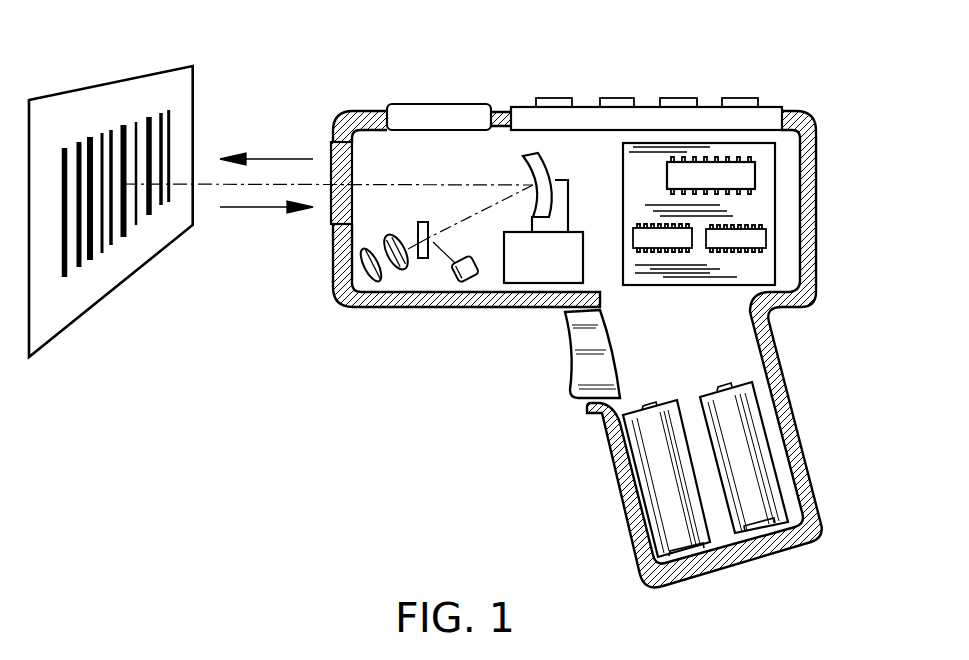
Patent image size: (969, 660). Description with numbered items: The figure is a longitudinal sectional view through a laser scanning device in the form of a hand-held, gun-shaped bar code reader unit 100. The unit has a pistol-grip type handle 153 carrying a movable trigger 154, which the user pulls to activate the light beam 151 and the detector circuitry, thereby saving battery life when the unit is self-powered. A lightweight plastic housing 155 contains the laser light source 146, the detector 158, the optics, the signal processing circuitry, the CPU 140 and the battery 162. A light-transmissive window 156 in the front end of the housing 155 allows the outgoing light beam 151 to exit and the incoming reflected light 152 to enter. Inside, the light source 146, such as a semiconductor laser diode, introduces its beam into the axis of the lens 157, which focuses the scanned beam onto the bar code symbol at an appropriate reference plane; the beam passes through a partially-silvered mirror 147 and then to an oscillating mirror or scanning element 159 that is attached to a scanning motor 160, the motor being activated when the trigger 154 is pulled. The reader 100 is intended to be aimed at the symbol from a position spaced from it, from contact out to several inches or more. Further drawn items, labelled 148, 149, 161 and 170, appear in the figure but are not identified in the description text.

The bar code reader unit 100 is at (527, 428).
The CPU 140 is at (683, 168).
The light source 146 is at (358, 278).
The partially-silvered mirror 147 is at (428, 260).
The circuit board 148 is at (713, 113).
The indicator 149 is at (448, 105).
The light beam 151 is at (277, 162).
The reflected light 152 is at (257, 208).
The handle 153 is at (612, 494).
The trigger 154 is at (568, 388).
The housing 155 is at (817, 250).
The window 156 is at (333, 148).
The lens 157 is at (402, 270).
The detector 158 is at (462, 284).
The scanning element 159 is at (545, 155).
The scanning motor 160 is at (525, 270).
The printed circuit board 161 is at (773, 185).
The battery 162 is at (755, 447).
The bar code symbol 170 is at (122, 125).